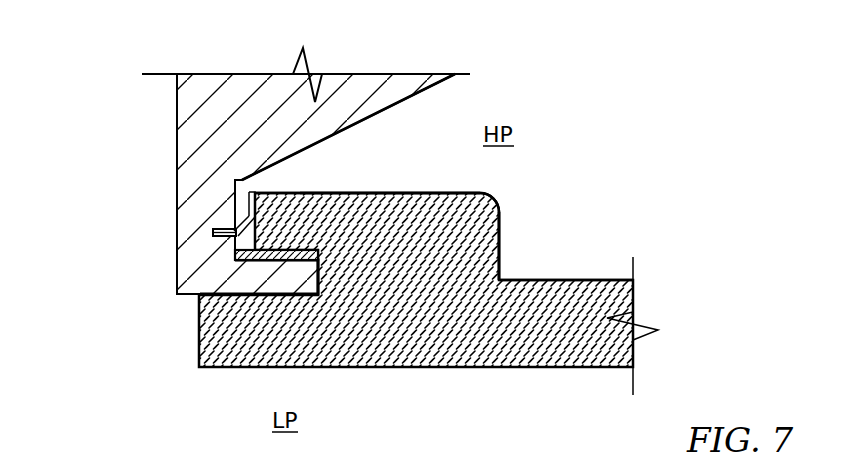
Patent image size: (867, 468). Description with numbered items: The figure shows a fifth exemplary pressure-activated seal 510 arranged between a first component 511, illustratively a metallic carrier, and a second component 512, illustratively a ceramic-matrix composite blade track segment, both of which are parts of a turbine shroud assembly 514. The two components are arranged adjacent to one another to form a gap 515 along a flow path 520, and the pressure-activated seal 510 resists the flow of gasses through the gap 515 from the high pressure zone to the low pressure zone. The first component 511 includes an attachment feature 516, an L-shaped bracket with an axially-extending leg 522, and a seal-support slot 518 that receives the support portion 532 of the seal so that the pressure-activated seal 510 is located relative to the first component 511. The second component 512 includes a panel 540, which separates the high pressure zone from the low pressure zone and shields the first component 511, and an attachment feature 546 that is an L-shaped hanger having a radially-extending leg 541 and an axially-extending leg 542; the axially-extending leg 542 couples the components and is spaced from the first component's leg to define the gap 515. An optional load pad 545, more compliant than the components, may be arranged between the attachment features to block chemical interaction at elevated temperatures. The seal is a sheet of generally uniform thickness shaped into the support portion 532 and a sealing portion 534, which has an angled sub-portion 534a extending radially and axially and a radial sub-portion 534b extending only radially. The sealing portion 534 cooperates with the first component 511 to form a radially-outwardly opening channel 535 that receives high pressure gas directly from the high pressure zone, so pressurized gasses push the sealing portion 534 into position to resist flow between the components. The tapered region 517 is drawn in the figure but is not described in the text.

The pressure-activated seal 510 is at (336, 242).
The first component 511 is at (312, 230).
The second component 512 is at (428, 284).
The turbine shroud assembly 514 is at (588, 92).
The gap 515 is at (222, 226).
The attachment feature 516 is at (168, 159).
The tapered second portion 517 is at (399, 83).
The seal-support slot 518 is at (228, 204).
The flow path 520 is at (447, 183).
The axially-extending leg 522 is at (256, 284).
The support portion 532 is at (214, 253).
The sealing portion 534 is at (243, 242).
The angled sub-portion 534a is at (258, 218).
The radial sub-portion 534b is at (262, 192).
The radially-outwardly opening channel 535 is at (246, 188).
The panel 540 is at (346, 352).
The radially-extending leg 541 is at (467, 263).
The axially-extending leg 542 is at (369, 205).
The load pad 545 is at (308, 241).
The attachment feature 546 is at (511, 223).